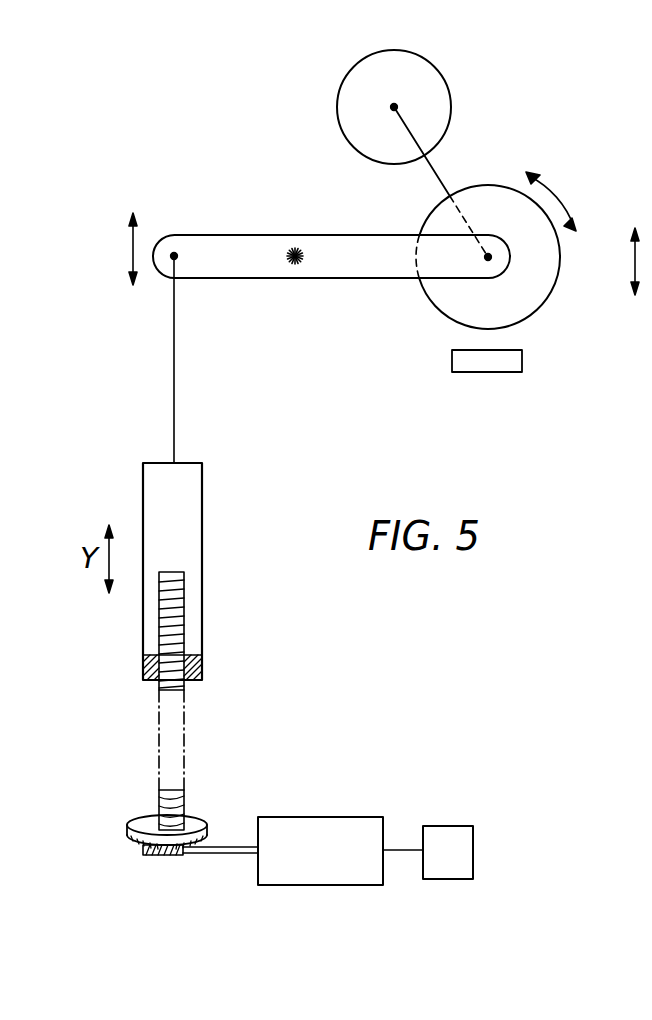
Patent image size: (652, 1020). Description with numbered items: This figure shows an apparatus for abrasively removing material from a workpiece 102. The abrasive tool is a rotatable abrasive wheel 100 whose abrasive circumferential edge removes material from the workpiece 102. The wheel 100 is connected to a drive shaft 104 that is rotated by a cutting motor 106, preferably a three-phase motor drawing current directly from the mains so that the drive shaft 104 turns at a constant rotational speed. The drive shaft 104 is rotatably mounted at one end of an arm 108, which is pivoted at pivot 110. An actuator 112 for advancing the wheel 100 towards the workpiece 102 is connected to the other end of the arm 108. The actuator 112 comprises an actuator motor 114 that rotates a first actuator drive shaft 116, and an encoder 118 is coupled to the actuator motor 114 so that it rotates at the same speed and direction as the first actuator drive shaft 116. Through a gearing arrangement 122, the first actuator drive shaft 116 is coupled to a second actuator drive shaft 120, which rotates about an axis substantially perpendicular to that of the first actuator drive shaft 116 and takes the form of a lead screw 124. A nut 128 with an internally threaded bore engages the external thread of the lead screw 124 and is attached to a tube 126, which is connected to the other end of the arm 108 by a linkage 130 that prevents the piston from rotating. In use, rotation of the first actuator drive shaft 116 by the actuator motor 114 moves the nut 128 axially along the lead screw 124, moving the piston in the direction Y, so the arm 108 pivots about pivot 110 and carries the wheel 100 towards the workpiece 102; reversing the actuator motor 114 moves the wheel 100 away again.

The abrasive wheel 100 is at (560, 268).
The workpiece 102 is at (487, 374).
The drive shaft 104 is at (437, 173).
The cutting motor 106 is at (337, 110).
The arm 108 is at (295, 235).
The pivot 110 is at (295, 266).
The actuator 112 is at (238, 601).
The actuator motor 114 is at (338, 817).
The first actuator drive shaft 116 is at (235, 858).
The encoder 118 is at (440, 826).
The second actuator drive shaft 120 is at (185, 762).
The gearing arrangement 122 is at (133, 858).
The lead screw 124 is at (158, 808).
The tube 126 is at (202, 513).
The nut 128 is at (202, 665).
The linkage 130 is at (174, 372).